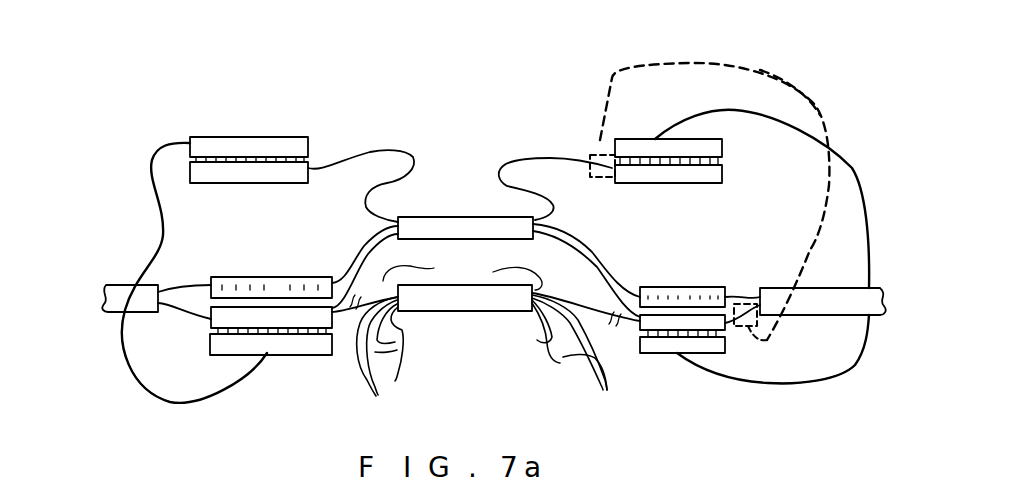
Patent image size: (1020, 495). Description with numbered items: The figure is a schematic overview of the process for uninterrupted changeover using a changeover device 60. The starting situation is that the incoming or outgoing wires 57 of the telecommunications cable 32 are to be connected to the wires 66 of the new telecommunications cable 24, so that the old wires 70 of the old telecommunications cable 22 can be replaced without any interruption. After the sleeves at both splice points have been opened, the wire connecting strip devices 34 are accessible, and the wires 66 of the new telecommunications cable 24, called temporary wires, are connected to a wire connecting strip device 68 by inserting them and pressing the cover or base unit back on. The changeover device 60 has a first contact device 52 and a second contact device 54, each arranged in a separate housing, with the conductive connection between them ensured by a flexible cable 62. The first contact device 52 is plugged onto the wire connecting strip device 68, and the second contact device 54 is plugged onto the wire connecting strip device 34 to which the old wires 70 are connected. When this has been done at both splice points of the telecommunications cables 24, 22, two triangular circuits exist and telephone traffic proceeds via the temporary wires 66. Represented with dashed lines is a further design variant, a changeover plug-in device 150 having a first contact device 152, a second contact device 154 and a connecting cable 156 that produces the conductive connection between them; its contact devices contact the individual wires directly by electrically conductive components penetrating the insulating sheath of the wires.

The old telecommunications cable 22 is at (478, 297).
The new telecommunications cable 24 is at (468, 225).
The telecommunications cable 32 is at (119, 301).
The wire connecting strip device 34 is at (262, 318).
The first contact device 52 is at (232, 137).
The second contact device 54 is at (300, 358).
The incoming or outgoing wires 57 is at (188, 288).
The changeover device 60 is at (152, 186).
The flexible cable 62 is at (160, 399).
The wires of the new telecommunications cable 66 is at (503, 163).
The wire connecting strip device 68 is at (226, 172).
The old wires 70 is at (372, 396).
The changeover plug-in device 150 is at (734, 63).
The first contact device 152 is at (591, 158).
The second contact device 154 is at (757, 338).
The connecting cable 156 is at (783, 84).